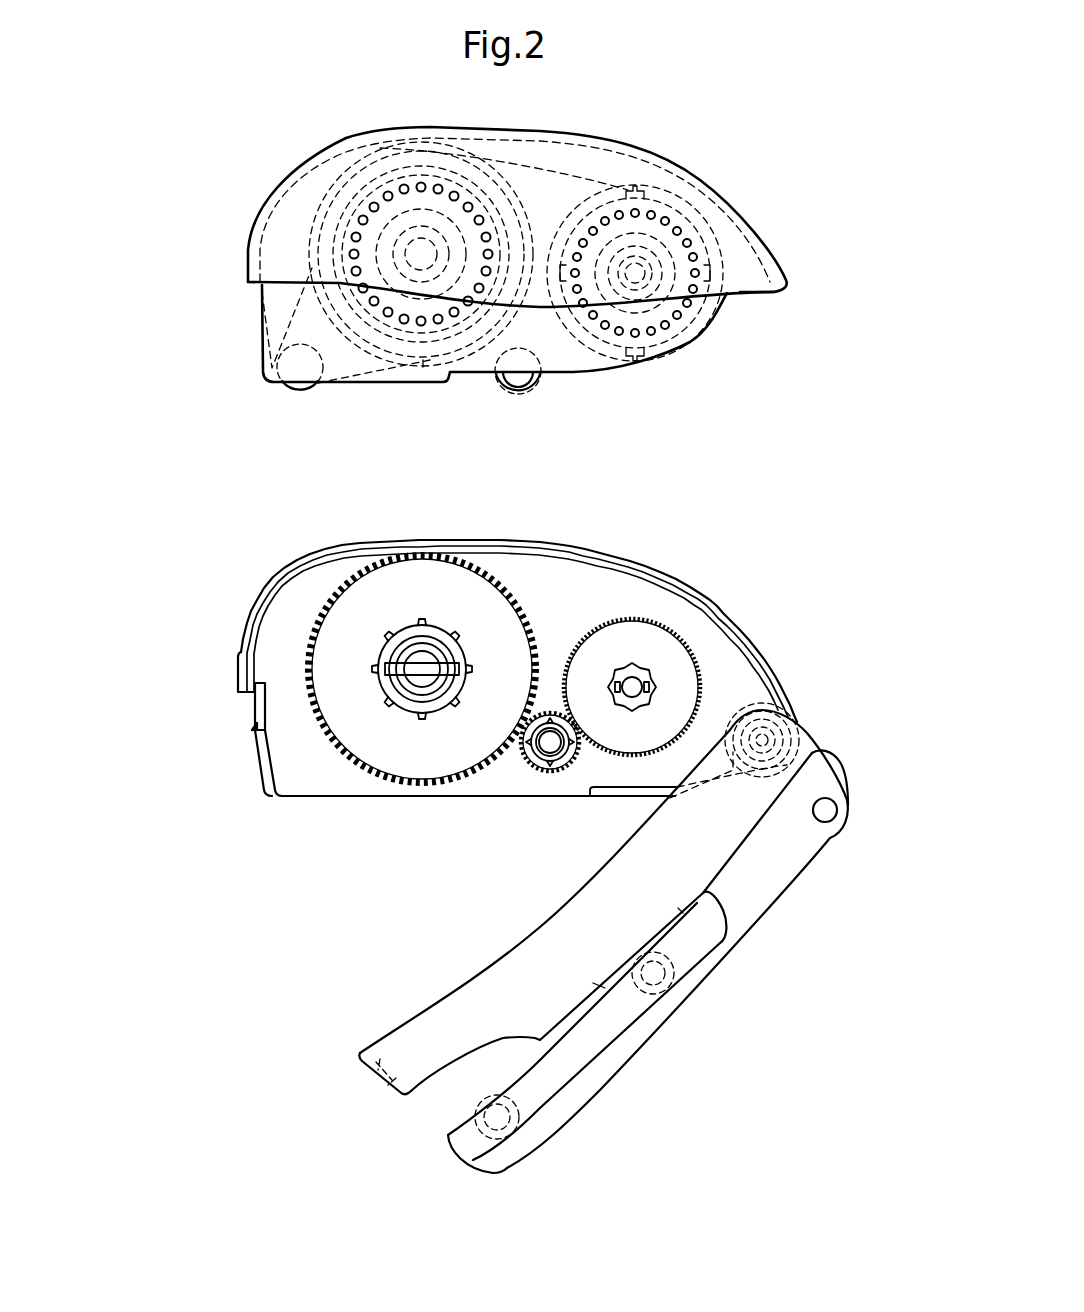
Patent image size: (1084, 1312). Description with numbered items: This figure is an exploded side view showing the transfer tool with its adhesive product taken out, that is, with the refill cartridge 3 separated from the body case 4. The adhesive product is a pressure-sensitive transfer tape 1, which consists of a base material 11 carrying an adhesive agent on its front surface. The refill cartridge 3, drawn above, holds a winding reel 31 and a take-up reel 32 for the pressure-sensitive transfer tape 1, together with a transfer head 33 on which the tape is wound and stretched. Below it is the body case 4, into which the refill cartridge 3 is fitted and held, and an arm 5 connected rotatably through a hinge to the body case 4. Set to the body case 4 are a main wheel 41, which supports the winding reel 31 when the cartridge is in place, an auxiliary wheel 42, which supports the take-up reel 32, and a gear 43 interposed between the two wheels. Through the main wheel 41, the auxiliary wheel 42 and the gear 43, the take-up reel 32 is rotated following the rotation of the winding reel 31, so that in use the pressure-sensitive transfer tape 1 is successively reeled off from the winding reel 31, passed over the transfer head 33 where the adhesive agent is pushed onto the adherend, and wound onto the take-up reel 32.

The pressure-sensitive transfer tape 1 is at (298, 303).
The refill cartridge 3 is at (788, 282).
The body case 4 is at (236, 673).
The arm 5 is at (357, 1056).
The base material 11 is at (368, 377).
The winding reel 31 is at (423, 362).
The take-up reel 32 is at (637, 186).
The transfer head 33 is at (298, 390).
The main wheel 41 is at (422, 618).
The auxiliary wheel 42 is at (632, 662).
The gear 43 is at (550, 773).